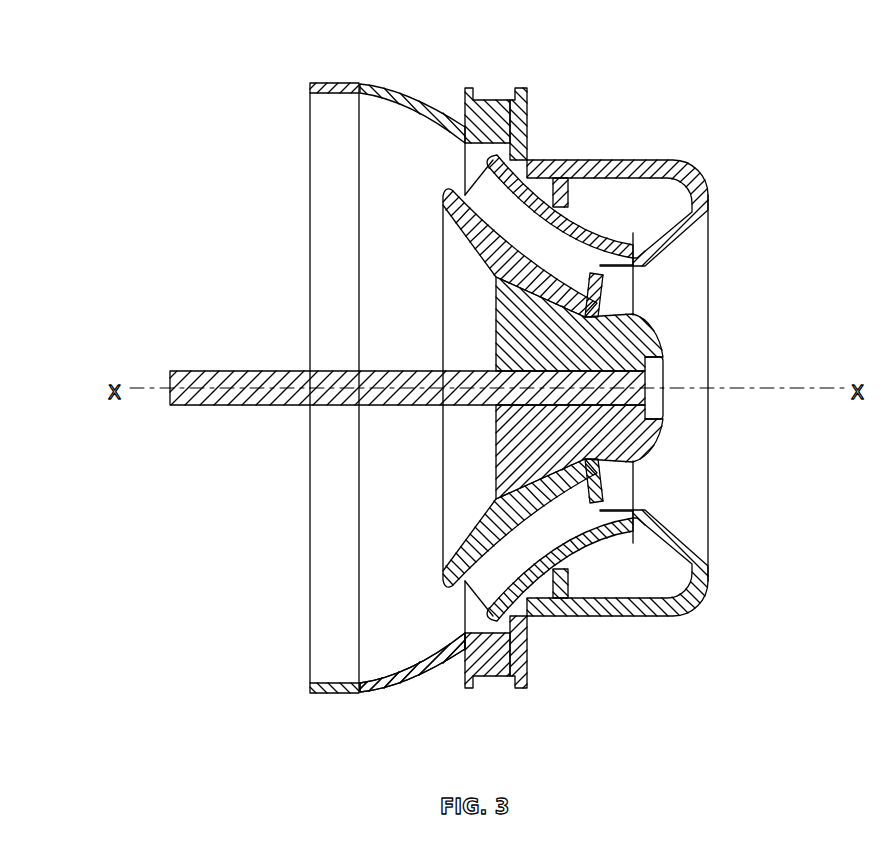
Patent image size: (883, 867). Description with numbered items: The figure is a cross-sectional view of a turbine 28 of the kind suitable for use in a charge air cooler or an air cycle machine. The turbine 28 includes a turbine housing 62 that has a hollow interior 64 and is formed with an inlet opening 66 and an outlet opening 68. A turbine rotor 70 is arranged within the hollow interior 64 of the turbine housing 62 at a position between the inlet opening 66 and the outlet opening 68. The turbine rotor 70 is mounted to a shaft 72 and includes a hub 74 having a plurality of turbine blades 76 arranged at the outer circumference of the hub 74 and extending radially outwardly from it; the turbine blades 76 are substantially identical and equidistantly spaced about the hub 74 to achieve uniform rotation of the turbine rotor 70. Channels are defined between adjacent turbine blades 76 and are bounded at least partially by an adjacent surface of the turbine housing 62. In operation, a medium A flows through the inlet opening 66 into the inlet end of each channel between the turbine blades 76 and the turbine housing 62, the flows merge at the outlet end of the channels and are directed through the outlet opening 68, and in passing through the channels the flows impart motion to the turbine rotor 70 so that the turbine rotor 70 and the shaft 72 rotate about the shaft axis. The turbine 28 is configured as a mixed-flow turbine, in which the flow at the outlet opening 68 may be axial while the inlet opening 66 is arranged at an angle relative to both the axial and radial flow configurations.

The turbine 28 is at (702, 178).
The turbine housing 62 is at (387, 693).
The hollow interior 64 is at (416, 336).
The inlet opening 66 is at (487, 85).
The outlet opening 68 is at (698, 353).
The turbine rotor 70 is at (690, 472).
The shaft 72 is at (233, 370).
The hub 74 is at (652, 426).
The turbine blades 76 is at (625, 285).
The medium A is at (507, 84).